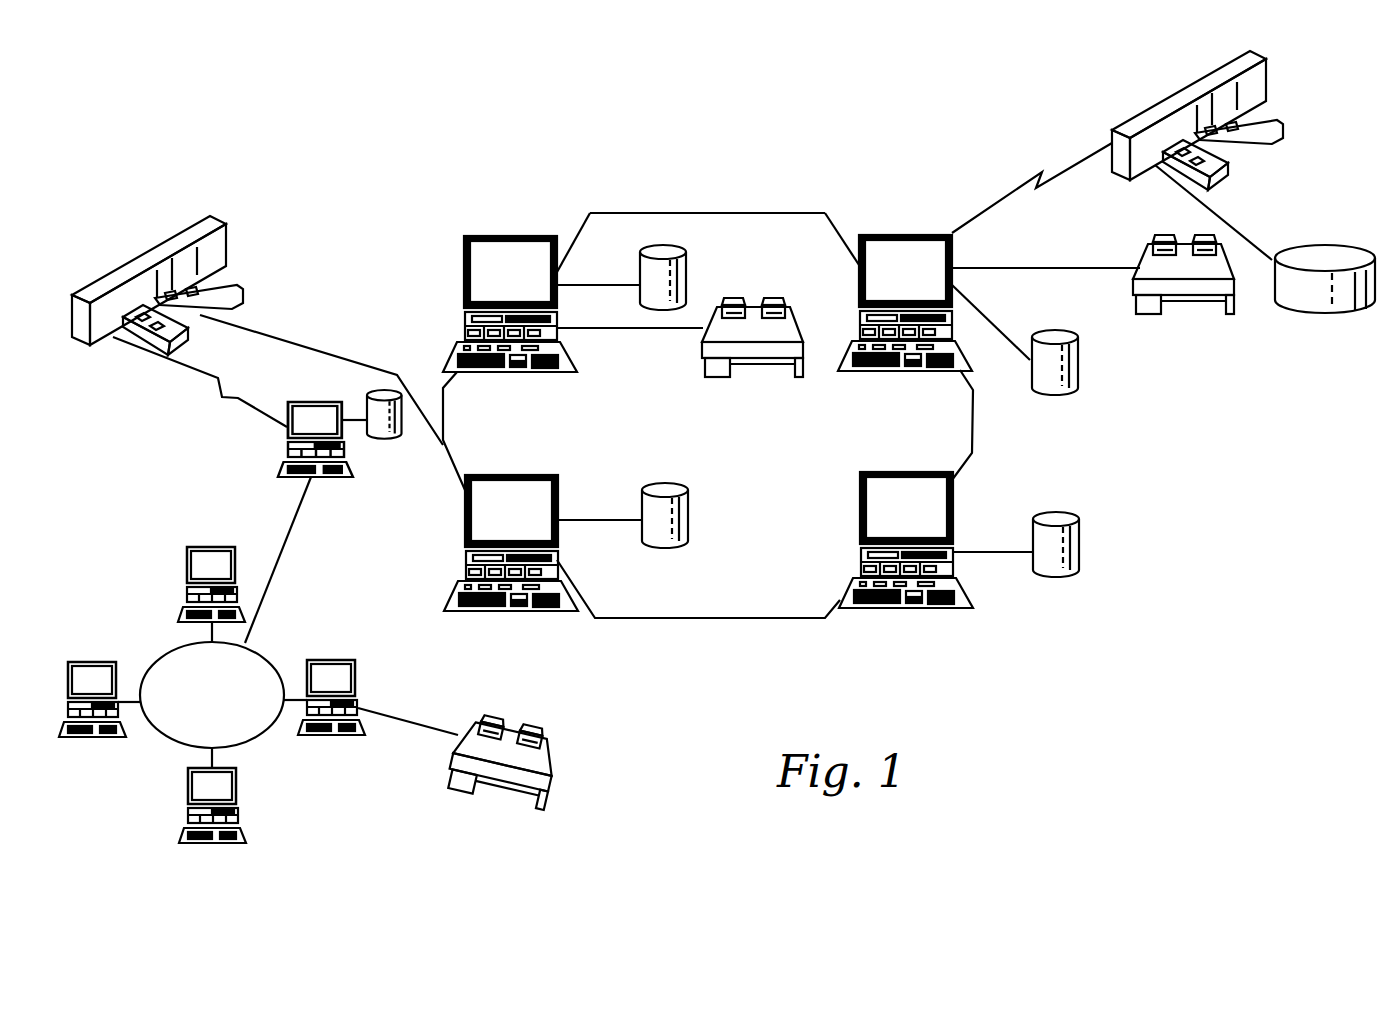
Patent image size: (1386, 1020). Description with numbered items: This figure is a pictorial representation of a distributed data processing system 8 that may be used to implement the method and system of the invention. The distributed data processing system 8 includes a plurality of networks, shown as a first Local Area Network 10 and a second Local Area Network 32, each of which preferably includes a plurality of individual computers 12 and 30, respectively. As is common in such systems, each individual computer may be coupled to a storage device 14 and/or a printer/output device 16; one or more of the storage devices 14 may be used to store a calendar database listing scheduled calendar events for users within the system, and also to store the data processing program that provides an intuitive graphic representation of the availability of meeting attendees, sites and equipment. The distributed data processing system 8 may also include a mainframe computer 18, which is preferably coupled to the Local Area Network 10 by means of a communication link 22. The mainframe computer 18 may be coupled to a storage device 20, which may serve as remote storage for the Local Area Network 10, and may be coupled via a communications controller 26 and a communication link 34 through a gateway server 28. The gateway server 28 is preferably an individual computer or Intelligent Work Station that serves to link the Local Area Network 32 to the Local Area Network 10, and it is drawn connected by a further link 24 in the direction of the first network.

The distributed data processing system 8 is at (742, 165).
The Local Area Network (LAN) 10 is at (734, 618).
The individual computer 12 is at (530, 235).
The storage device 14 is at (687, 267).
The printer/output device 16 is at (756, 300).
The mainframe computer 18 is at (1189, 86).
The storage device 20 is at (1347, 250).
The communication link 22 is at (1071, 162).
The communication link 24 is at (319, 334).
The communications controller 26 is at (224, 226).
The gateway server 28 is at (311, 402).
The individual computer 30 is at (213, 546).
The Local Area Network (LAN) 32 is at (164, 739).
The communication link 34 is at (237, 395).